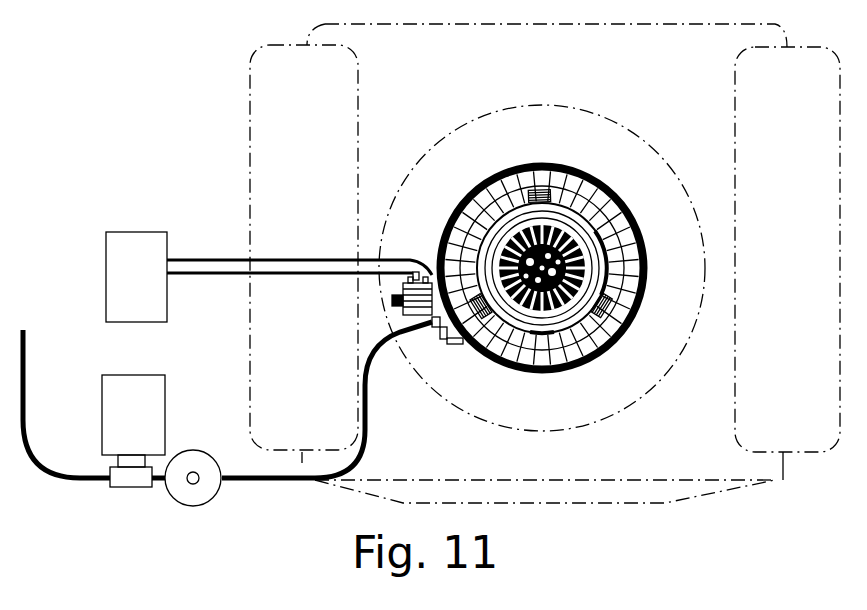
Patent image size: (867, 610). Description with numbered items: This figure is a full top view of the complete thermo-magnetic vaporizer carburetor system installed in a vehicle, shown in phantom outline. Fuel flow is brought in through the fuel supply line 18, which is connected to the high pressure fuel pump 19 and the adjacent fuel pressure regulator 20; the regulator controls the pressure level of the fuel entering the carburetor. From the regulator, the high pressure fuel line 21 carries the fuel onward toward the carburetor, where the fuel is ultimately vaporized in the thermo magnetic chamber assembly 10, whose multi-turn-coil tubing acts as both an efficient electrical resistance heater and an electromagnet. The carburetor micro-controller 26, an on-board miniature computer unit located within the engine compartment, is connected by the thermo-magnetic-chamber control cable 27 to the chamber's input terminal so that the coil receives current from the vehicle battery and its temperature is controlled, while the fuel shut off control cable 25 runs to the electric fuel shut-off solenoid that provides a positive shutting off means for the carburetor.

The thermo magnetic chamber assembly 10 is at (510, 162).
The fuel supply line to fuel pump 18 is at (23, 330).
The high pressure fuel pump 19 is at (150, 405).
The fuel pressure regulator 20 is at (198, 495).
The high pressure fuel line 21 is at (292, 482).
The fuel shut off control cable 25 is at (215, 272).
The carburetor micro-controller 26 is at (140, 245).
The thermo-magnetic-chamber control cable 27 is at (187, 258).